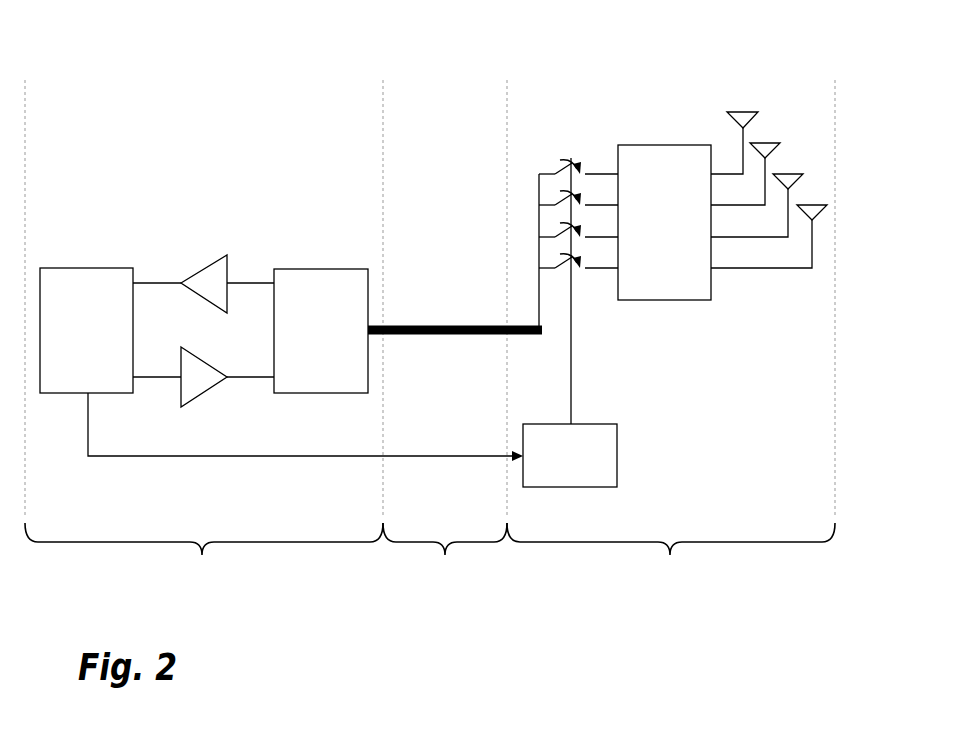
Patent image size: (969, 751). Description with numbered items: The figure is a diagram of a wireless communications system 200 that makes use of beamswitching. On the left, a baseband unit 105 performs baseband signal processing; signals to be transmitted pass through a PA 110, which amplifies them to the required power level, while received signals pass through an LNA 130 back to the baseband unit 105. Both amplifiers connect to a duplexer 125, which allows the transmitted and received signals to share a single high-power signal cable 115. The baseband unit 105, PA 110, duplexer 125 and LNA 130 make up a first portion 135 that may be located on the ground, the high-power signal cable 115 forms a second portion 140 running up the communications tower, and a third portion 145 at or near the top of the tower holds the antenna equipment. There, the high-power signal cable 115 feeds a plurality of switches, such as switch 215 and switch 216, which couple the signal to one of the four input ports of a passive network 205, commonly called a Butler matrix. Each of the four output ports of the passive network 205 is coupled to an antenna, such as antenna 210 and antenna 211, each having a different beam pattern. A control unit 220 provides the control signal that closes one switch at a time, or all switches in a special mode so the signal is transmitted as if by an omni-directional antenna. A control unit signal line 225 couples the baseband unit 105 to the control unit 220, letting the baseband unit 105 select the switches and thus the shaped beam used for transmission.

The wireless communications system 200 is at (121, 44).
The baseband unit 105 is at (95, 268).
The low noise amplifier (LNA) 130 is at (215, 262).
The PA 110 is at (204, 358).
The duplexer 125 is at (329, 269).
The high-power signal cable 115 is at (470, 327).
The switch 216 is at (539, 207).
The switch 215 is at (546, 174).
The passive network 205 is at (660, 145).
The antenna 210 is at (743, 112).
The antenna 211 is at (765, 142).
The control unit 220 is at (594, 424).
The control unit signal line 225 is at (423, 455).
The first portion 135 is at (204, 558).
The second portion 140 is at (445, 558).
The third portion 145 is at (671, 558).